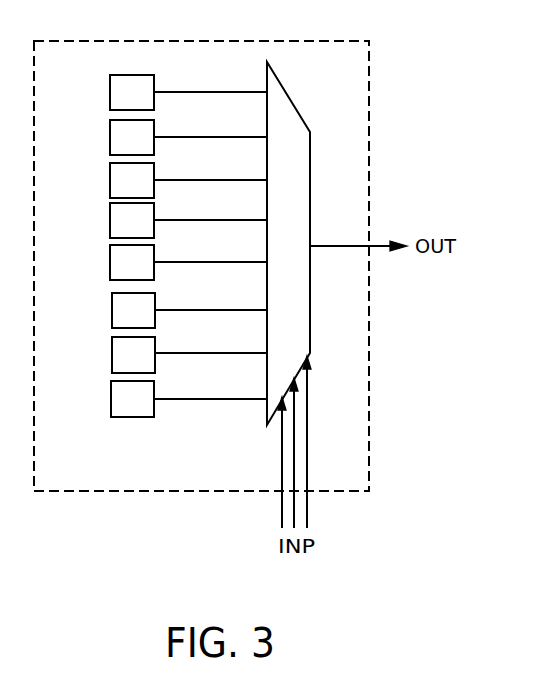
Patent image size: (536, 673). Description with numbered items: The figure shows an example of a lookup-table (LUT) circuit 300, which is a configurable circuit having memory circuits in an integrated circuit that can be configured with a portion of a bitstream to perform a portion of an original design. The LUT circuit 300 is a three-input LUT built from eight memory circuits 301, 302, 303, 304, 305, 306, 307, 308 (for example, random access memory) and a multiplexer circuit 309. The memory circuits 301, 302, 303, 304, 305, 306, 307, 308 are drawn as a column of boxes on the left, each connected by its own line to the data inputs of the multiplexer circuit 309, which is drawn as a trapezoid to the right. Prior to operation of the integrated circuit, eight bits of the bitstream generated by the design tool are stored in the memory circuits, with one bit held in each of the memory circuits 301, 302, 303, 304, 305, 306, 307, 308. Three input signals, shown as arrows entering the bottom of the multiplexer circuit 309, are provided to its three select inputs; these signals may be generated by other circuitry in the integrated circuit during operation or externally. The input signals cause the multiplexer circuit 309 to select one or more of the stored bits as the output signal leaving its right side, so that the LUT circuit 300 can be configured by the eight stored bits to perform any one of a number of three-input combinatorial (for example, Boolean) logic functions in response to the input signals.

The lookup-table (LUT) circuit 300 is at (302, 41).
The memory circuit 301 is at (110, 92).
The memory circuit 302 is at (110, 137).
The memory circuit 303 is at (110, 180).
The memory circuit 304 is at (110, 220).
The memory circuit 305 is at (110, 262).
The memory circuit 306 is at (112, 310).
The memory circuit 307 is at (112, 353).
The memory circuit 308 is at (111, 399).
The multiplexer circuit 309 is at (288, 95).